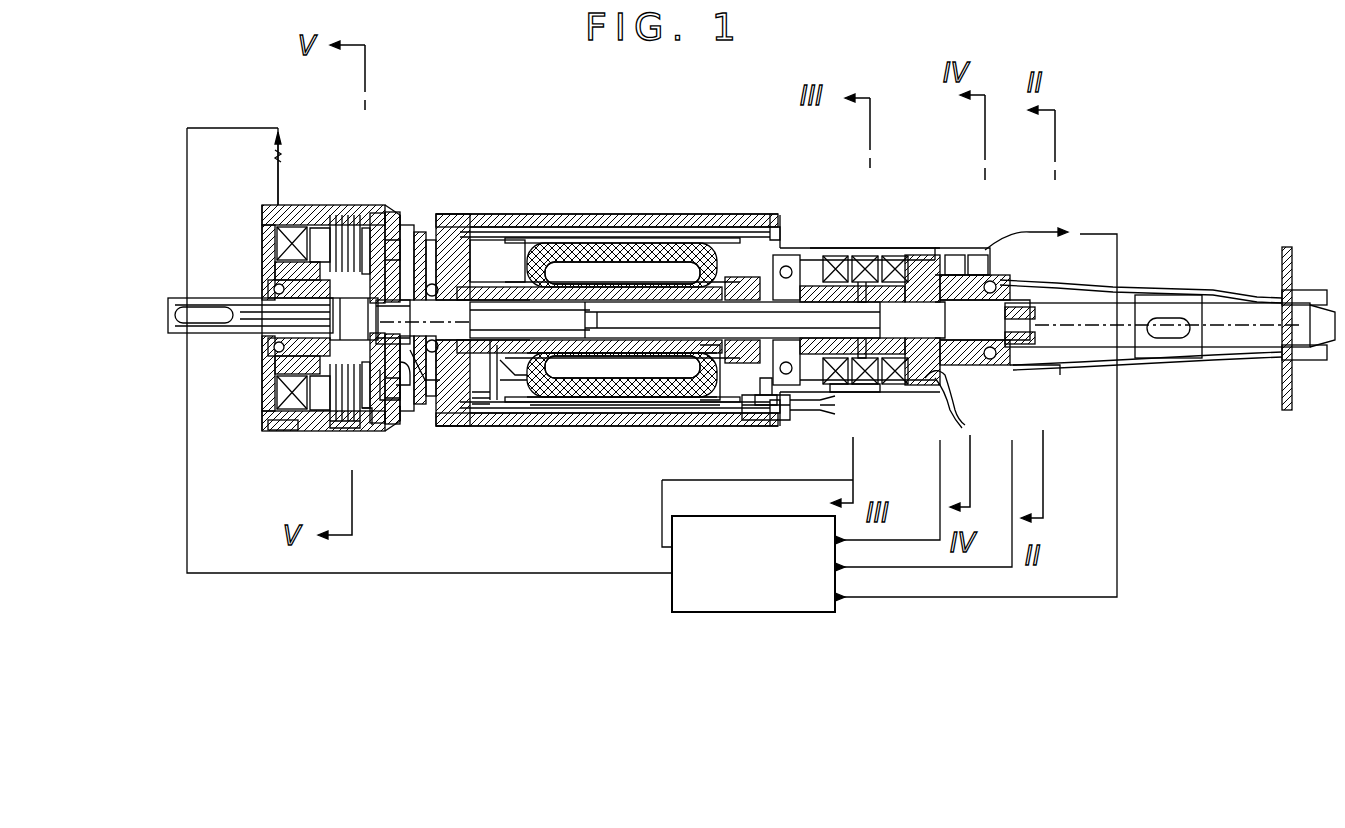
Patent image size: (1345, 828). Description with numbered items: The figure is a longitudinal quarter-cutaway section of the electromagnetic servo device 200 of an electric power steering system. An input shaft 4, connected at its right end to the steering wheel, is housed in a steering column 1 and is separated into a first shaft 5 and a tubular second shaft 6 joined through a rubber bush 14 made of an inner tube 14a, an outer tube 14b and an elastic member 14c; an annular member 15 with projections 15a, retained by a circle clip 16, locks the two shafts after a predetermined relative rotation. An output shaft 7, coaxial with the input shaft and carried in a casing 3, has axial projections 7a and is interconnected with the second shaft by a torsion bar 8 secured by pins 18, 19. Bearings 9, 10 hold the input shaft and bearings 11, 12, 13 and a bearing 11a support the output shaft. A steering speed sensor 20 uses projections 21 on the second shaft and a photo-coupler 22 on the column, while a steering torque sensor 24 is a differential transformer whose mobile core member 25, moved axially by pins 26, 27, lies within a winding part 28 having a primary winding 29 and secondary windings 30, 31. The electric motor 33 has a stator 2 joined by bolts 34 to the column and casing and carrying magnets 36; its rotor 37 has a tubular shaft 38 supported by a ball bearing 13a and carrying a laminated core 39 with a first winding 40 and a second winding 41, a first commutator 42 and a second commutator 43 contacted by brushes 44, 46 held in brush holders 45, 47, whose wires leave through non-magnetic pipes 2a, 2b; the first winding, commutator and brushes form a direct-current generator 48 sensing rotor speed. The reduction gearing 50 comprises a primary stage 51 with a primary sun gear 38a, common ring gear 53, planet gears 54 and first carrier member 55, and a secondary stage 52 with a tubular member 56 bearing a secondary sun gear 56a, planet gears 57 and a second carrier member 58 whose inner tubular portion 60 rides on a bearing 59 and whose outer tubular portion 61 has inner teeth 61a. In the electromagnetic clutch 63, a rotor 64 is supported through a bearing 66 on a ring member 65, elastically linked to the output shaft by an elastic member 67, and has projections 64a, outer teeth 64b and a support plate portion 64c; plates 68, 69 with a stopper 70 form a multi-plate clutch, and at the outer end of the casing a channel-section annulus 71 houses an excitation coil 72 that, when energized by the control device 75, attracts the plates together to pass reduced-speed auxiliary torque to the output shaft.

The steering column 1 is at (1208, 290).
The stator 2 is at (776, 218).
The non-magnetic pipe 2a is at (567, 410).
The non-magnetic pipe 2b is at (797, 412).
The casing 3 is at (462, 232).
The input shaft 4 is at (1126, 299).
The first shaft 5 is at (1113, 342).
The second shaft 6 is at (915, 302).
The output shaft 7 is at (500, 332).
The axial projection 7a is at (845, 386).
The torsion bar 8 is at (586, 412).
The bearing 9 is at (1295, 292).
The bearing 10 is at (1010, 280).
The bearing 11 is at (795, 270).
The bearing 11a is at (760, 232).
The needle bearing 12 is at (738, 292).
The needle bearing 13 is at (476, 290).
The ball bearing 13a is at (497, 261).
The rubber bush 14 is at (1002, 372).
The inner metallic tube 14a is at (958, 385).
The outer metallic tube 14b is at (1018, 390).
The elastic member 14c is at (1022, 322).
The annular member 15 is at (1045, 350).
The radially outward projection 15a is at (1025, 360).
The circle clip 16 is at (1068, 290).
The pin 18 is at (912, 386).
The pin 19 is at (603, 285).
The steering speed sensor 20 is at (956, 252).
The radially outward projection 21 is at (1000, 256).
The photo-coupler 22 is at (975, 255).
The steering torque sensor 24 is at (876, 262).
The mobile tubular ferrous core member 25 is at (922, 270).
The pin 26 is at (870, 388).
The pin 27 is at (862, 285).
The winding part 28 is at (842, 262).
The primary winding 29 is at (892, 265).
The secondary winding 30 is at (905, 262).
The secondary winding 31 is at (832, 258).
The electric motor 33 is at (635, 205).
The bolt 34 is at (684, 220).
The magnet 36 is at (658, 406).
The rotor 37 is at (662, 228).
The tubular shaft 38 is at (582, 320).
The primary sun gear 38a is at (438, 378).
The laminated ferrous core 39 is at (590, 262).
The first multiple winding 40 is at (528, 258).
The second multiple winding 41 is at (546, 270).
The first commutator 42 is at (706, 396).
The second commutator 43 is at (515, 386).
The brush 44 is at (737, 402).
The brush holder 45 is at (770, 408).
The brush 46 is at (500, 390).
The brush holder 47 is at (470, 400).
The direct-current generator 48 is at (620, 380).
The reduction gearing 50 is at (420, 235).
The primary stage 51 is at (432, 240).
The secondary stage 52 is at (393, 218).
The common ring gear 53 is at (407, 250).
The primary planet gear 54 is at (448, 270).
The first carrier member 55 is at (428, 252).
The tubular member 56 is at (432, 362).
The secondary sun gear 56a is at (396, 372).
The secondary planet gear 57 is at (392, 245).
The second carrier member 58 is at (378, 230).
The bearing 59 is at (402, 300).
The inner tubular portion 60 is at (350, 299).
The outer tubular portion 61 is at (332, 255).
The inner teeth 61a is at (362, 240).
The electromagnetic clutch 63 is at (278, 436).
The rotor 64 is at (300, 292).
The projection 64a is at (262, 360).
The outer teeth 64b is at (290, 268).
The support plate portion 64c is at (320, 280).
The ring member 65 is at (330, 290).
The bearing 66 is at (262, 297).
The ring-like elastic member 67 is at (300, 333).
The disc-like plate 68 is at (326, 418).
The disc-like plate 69 is at (346, 412).
The stopper 70 is at (360, 400).
The yoke 71 is at (280, 250).
The annular excitation coil 72 is at (275, 235).
The control device 75 is at (783, 612).
The electromagnetic servo device 200 is at (1200, 461).